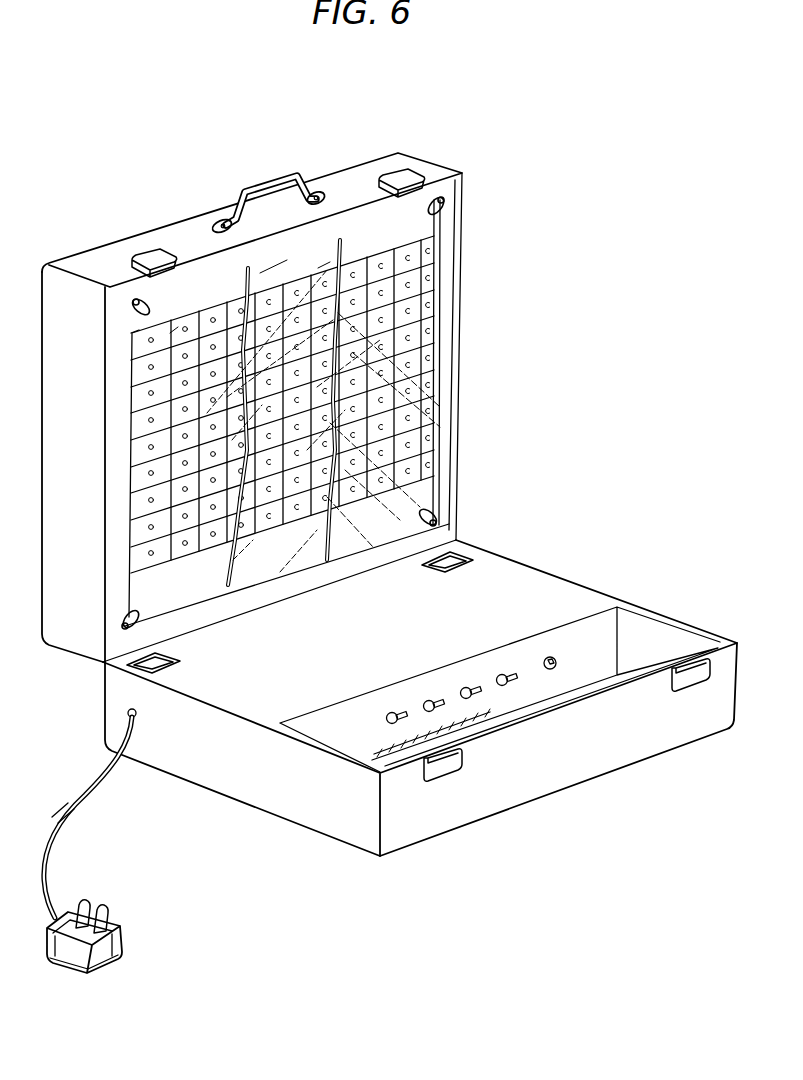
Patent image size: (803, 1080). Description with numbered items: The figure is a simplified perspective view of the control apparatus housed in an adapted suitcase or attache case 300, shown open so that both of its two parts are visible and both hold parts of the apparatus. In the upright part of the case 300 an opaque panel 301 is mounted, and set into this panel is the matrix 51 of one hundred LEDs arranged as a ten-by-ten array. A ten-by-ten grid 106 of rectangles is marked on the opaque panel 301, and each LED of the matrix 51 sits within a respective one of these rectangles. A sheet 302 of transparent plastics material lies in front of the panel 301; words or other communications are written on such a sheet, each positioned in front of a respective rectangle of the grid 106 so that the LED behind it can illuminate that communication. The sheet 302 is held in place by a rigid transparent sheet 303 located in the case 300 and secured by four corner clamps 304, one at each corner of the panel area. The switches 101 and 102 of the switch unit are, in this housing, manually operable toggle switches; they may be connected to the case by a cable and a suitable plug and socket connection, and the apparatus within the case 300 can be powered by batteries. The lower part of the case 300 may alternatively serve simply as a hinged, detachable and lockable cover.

The suitcase or attache case 300 is at (480, 271).
The opaque panel 301 is at (143, 327).
The sheet of transparent plastics material 302 is at (282, 553).
The rigid transparent sheet 303 is at (375, 523).
The corner clamps 304 is at (131, 297).
The matrix 51 is at (124, 433).
The ten-by-ten grid 106 is at (213, 290).
The switch 101 is at (122, 900).
The switch 102 is at (133, 927).